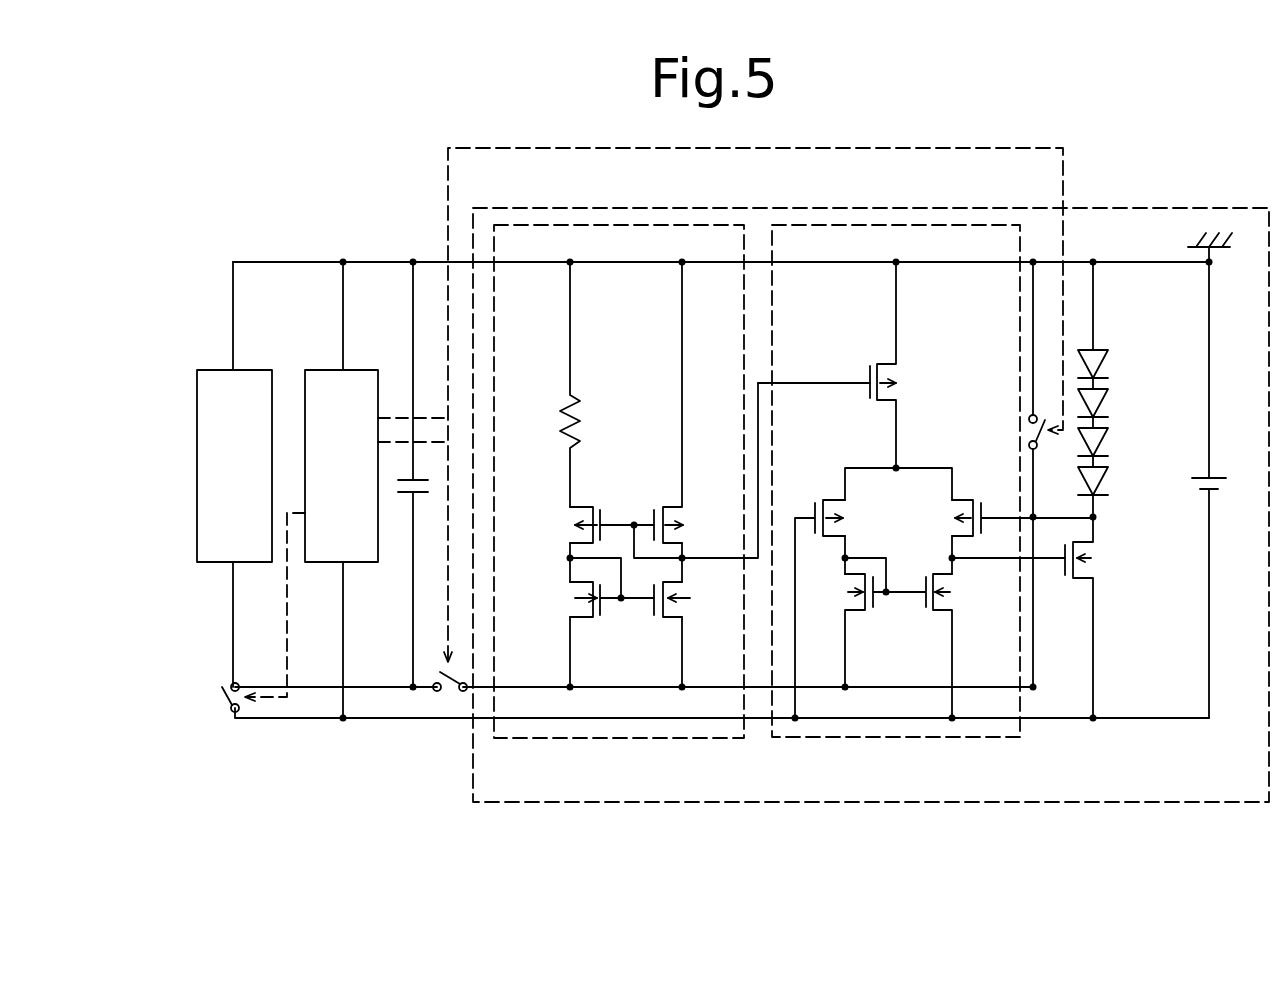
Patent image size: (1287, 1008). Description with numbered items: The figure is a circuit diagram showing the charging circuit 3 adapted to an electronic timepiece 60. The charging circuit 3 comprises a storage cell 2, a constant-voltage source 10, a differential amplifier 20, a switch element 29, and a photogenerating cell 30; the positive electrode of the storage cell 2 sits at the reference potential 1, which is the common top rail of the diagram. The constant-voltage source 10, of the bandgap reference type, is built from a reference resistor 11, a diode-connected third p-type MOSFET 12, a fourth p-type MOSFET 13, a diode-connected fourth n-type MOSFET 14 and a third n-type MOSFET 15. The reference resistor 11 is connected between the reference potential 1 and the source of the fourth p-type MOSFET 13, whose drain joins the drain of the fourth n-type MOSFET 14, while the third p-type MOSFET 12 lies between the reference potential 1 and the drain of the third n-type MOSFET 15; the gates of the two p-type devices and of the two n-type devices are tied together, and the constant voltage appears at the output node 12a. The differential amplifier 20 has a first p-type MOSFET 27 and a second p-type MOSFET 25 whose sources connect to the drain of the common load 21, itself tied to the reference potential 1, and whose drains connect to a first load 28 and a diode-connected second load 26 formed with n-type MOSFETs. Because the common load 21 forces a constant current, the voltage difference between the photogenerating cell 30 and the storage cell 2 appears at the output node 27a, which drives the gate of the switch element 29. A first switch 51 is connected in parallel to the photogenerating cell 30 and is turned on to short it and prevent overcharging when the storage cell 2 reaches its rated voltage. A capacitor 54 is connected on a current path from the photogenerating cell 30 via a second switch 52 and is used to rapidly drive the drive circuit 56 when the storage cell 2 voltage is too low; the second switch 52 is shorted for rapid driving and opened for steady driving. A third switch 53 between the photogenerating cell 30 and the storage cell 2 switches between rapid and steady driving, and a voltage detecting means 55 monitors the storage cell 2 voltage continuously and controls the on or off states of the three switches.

The reference potential 1 is at (1220, 254).
The storage cell 2 is at (1197, 488).
The charging circuit 3 is at (1175, 803).
The constant-voltage source 10 is at (575, 740).
The reference resistor 11 is at (585, 415).
The third p-type MOSFET 12 is at (688, 516).
The output node 12a is at (687, 558).
The fourth p-type MOSFET 13 is at (568, 522).
The fourth n-type MOSFET 14 is at (565, 597).
The third n-type MOSFET 15 is at (690, 603).
The differential amplifier 20 is at (769, 740).
The common load 21 is at (904, 381).
The second p-type MOSFET 25 is at (828, 488).
The second load 26 is at (843, 596).
The first p-type MOSFET 27 is at (963, 488).
The output node 27a is at (951, 556).
The first load 28 is at (960, 597).
The switch element 29 is at (1068, 585).
The photogenerating cell 30 is at (1109, 438).
The first switch 51 is at (1020, 429).
The second switch 52 is at (450, 690).
The third switch 53 is at (220, 708).
The capacitor 54 is at (423, 500).
The voltage detecting means 55 is at (328, 565).
The drive circuit 56 is at (216, 565).
The electronic timepiece 60 is at (393, 793).